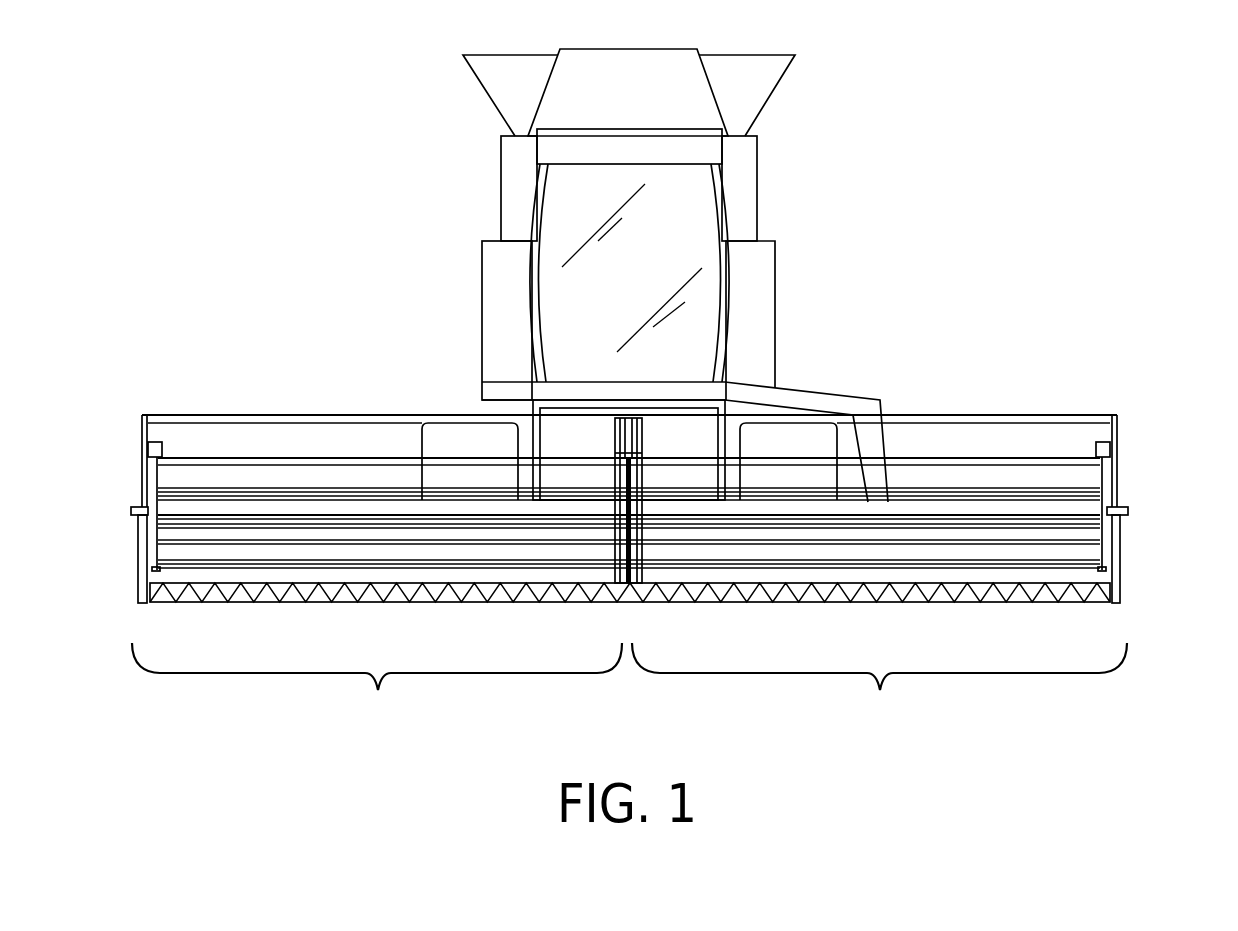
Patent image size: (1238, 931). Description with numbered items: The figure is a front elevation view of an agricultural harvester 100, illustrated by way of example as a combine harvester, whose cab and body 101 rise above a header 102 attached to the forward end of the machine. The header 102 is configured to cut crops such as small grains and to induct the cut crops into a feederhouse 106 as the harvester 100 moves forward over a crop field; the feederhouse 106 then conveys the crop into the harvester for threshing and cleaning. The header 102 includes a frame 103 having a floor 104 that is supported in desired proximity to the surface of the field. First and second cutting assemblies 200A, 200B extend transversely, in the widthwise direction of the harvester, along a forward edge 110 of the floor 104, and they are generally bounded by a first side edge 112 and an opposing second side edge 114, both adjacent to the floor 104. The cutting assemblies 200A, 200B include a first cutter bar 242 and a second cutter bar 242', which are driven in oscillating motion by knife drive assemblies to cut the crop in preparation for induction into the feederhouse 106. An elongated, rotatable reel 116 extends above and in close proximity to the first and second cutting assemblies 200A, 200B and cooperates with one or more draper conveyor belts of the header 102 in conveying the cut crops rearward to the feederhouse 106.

The agricultural harvester 100 is at (447, 212).
The harvester chassis / cab 101 is at (760, 211).
The header 102 is at (132, 417).
The frame 103 is at (1067, 417).
The floor 104 is at (335, 582).
The feederhouse 106 is at (680, 420).
The forward edge 110 is at (318, 604).
The first side edge 112 is at (138, 577).
The second side edge 114 is at (1120, 577).
The rotatable reel 116 is at (937, 532).
The first cutter bar 242 is at (390, 614).
The second cutter bar 242' is at (870, 614).
The first cutting assembly 200A is at (377, 685).
The second cutting assembly 200B is at (879, 685).